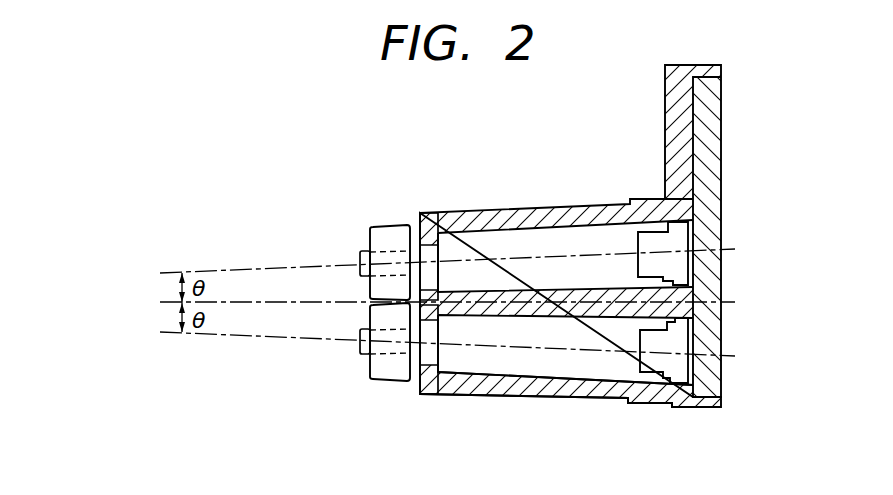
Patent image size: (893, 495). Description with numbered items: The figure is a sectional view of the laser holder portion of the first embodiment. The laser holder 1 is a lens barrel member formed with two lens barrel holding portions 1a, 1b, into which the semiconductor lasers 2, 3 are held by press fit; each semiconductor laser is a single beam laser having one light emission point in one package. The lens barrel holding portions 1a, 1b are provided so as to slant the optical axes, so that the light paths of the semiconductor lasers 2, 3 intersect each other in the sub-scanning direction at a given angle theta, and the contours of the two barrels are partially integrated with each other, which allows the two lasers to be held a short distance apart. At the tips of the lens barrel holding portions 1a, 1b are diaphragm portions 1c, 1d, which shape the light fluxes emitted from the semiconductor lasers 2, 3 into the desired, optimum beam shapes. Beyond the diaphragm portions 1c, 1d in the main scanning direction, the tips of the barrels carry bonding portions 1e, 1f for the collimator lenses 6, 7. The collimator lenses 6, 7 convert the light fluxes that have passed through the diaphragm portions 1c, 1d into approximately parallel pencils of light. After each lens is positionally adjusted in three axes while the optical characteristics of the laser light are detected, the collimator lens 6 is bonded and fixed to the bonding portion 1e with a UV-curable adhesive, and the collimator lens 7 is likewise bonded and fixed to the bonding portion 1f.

The laser holder 1 is at (685, 123).
The lens barrel holding portion 1a is at (576, 224).
The lens barrel holding portion 1b is at (585, 390).
The diaphragm portion 1c is at (430, 238).
The diaphragm portion 1d is at (430, 387).
The bonding portion 1e is at (360, 252).
The bonding portion 1f is at (362, 353).
The semiconductor laser 2 is at (682, 233).
The semiconductor laser 3 is at (680, 343).
The collimator lens 6 is at (393, 227).
The collimator lens 7 is at (390, 381).